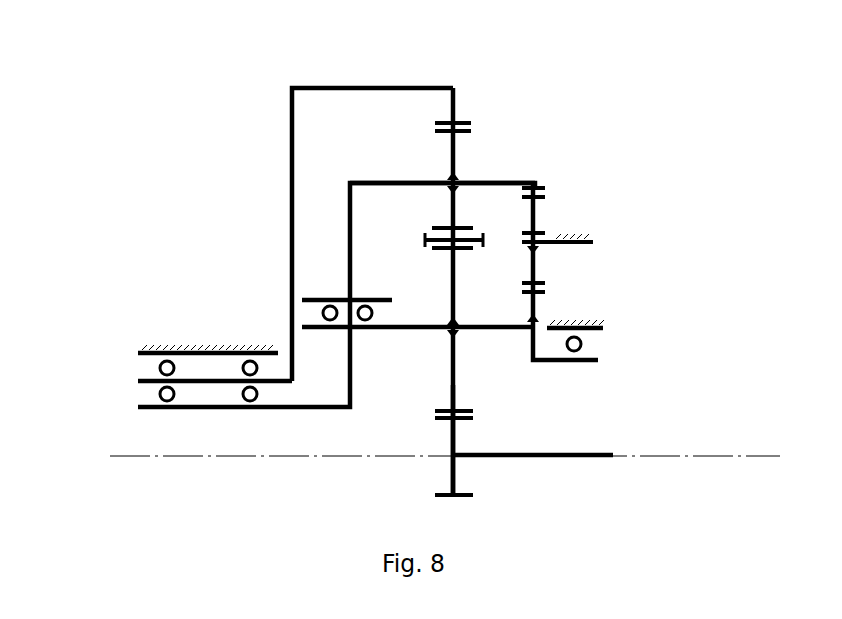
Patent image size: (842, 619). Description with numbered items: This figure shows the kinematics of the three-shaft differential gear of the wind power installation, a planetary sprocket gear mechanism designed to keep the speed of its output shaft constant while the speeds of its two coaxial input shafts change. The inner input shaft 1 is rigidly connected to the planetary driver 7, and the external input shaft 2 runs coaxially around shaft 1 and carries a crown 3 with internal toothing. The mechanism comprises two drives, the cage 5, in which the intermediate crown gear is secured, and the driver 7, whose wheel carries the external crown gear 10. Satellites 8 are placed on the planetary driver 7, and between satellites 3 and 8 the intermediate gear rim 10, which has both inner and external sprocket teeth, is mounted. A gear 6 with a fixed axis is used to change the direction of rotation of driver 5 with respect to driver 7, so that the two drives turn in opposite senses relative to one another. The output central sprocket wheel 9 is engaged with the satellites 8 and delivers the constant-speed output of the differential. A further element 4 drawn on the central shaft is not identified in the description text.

The inner input shaft 1 is at (180, 407).
The external input shaft 2 is at (150, 381).
The crown with internal toothing 3 is at (458, 123).
The main shaft 4 is at (455, 168).
The cage 5 is at (510, 182).
The gear with fixed axis 6 is at (536, 214).
The planetary driver 7 is at (537, 308).
The satellites 8 is at (453, 385).
The output central sprocket wheel 9 is at (453, 478).
The intermediate gear rim 10 is at (425, 240).